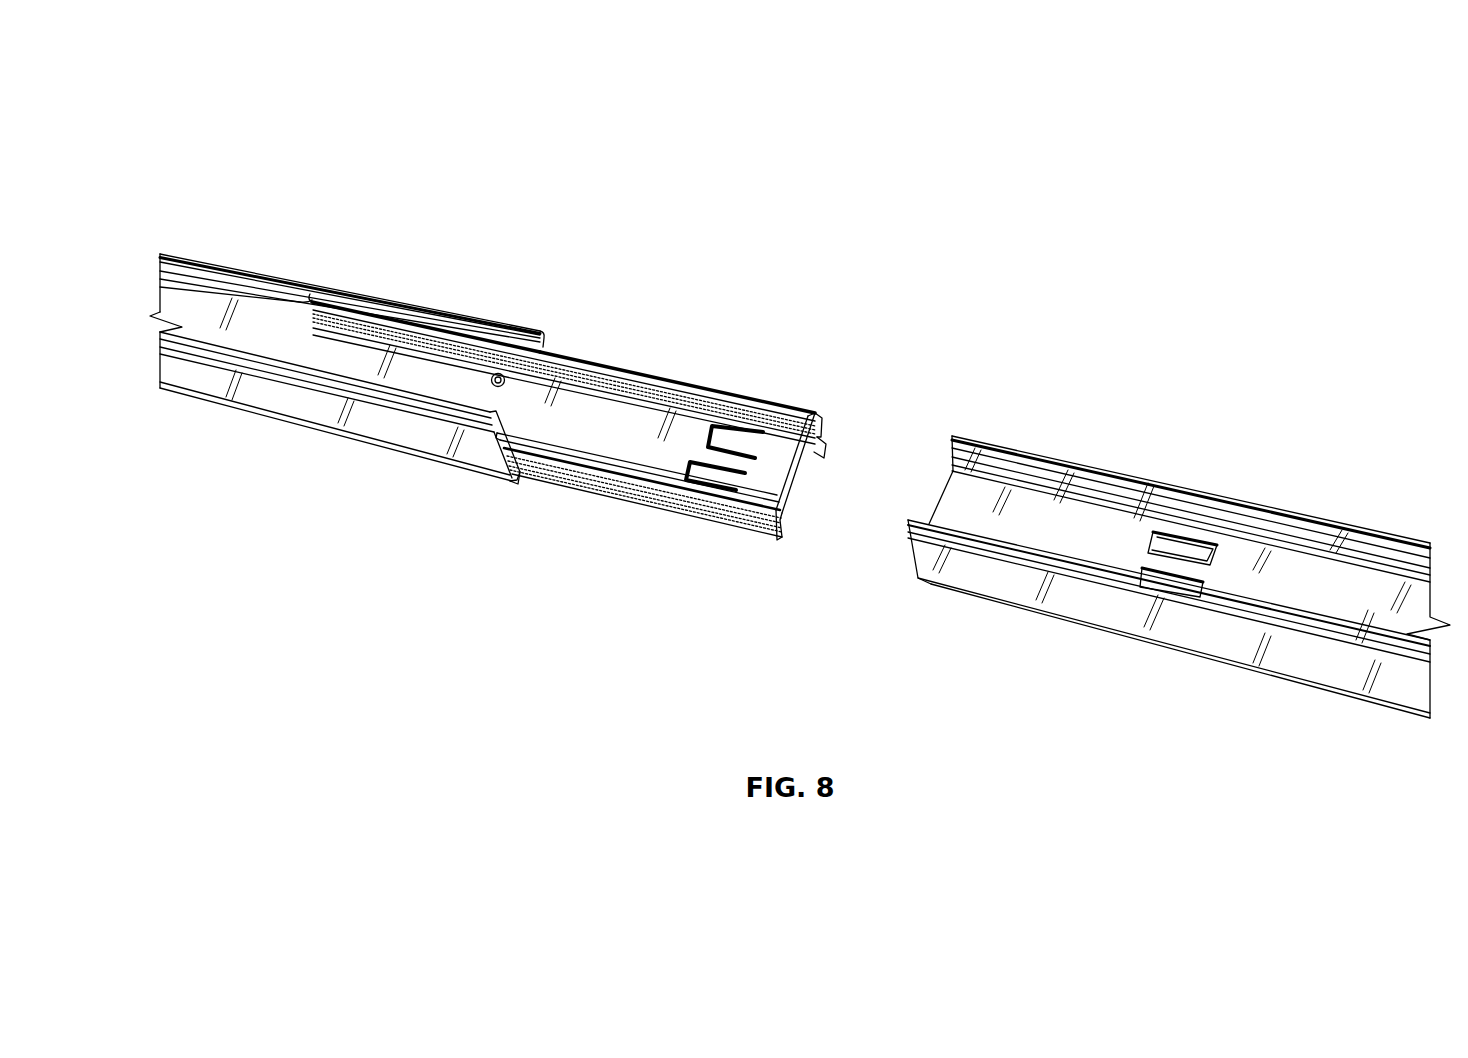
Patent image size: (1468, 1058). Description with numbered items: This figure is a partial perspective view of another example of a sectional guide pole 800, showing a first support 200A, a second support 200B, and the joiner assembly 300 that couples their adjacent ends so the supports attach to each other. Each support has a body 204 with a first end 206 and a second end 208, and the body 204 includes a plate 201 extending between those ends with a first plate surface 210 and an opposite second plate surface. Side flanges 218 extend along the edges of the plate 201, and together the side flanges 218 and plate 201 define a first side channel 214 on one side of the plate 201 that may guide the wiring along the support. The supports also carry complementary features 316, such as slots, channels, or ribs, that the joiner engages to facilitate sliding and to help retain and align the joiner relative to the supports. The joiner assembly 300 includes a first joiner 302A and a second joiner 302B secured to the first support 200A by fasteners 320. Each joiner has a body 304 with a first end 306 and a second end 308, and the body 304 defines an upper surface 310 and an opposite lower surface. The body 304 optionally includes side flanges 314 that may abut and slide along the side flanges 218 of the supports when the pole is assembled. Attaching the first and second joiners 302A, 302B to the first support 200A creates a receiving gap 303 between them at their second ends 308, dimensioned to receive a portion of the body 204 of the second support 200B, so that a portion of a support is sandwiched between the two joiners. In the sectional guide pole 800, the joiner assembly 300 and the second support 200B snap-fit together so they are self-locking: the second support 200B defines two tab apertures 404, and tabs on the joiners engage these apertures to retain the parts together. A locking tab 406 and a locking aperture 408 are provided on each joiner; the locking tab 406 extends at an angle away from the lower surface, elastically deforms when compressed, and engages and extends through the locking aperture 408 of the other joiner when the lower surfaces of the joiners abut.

The sectional guide pole 800 is at (173, 133).
The first support 200A is at (195, 410).
The second support 200B is at (1070, 610).
The plate 201 is at (173, 305).
The body 204 is at (275, 400).
The first end 206 is at (952, 440).
The second end 208 is at (510, 478).
The first plate surface 210 is at (208, 385).
The first side channel 214 is at (186, 266).
The side flanges 218 is at (370, 430).
The joiner assembly 300 is at (606, 408).
The first joiner 302A is at (610, 407).
The second joiner 302B is at (750, 540).
The receiving gap 303 is at (800, 487).
The body 304 is at (672, 390).
The first end 306 is at (289, 330).
The second end 308 is at (823, 417).
The upper surface 310 is at (570, 399).
The side flanges 314 is at (720, 388).
The complementary features 316 is at (236, 290).
The fasteners 320 is at (475, 403).
The tab apertures 404 is at (1178, 540).
The locking tab 406 is at (745, 440).
The locking aperture 408 is at (690, 470).